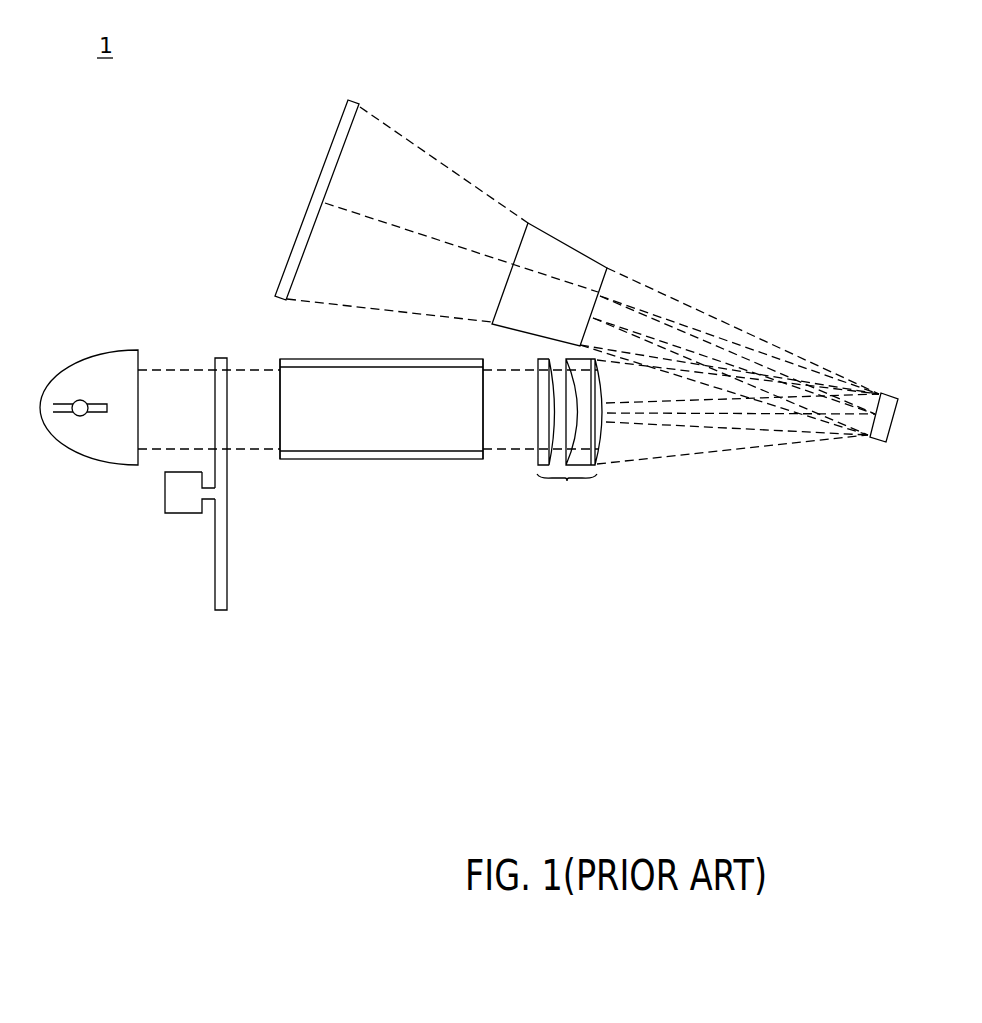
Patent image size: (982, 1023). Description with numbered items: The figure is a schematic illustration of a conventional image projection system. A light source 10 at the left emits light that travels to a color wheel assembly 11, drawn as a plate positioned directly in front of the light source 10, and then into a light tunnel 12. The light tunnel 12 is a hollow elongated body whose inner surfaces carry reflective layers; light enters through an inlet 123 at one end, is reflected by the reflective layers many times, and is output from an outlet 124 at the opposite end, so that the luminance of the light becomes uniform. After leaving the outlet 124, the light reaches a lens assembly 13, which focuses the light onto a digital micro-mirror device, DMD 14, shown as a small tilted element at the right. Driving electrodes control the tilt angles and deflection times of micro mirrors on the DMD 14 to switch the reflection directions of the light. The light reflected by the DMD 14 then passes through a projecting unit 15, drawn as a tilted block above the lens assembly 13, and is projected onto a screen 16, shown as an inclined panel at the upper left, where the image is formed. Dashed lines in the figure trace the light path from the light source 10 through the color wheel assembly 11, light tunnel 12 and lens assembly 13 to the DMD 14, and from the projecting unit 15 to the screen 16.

The light source 10 is at (80, 400).
The color wheel assembly 11 is at (212, 583).
The light tunnel 12 is at (367, 460).
The inlet 123 is at (278, 422).
The outlet 124 is at (483, 418).
The lens assembly 13 is at (569, 433).
The digital micro-mirror device (DMD) 14 is at (877, 443).
The projecting unit 15 is at (568, 242).
The screen 16 is at (362, 108).